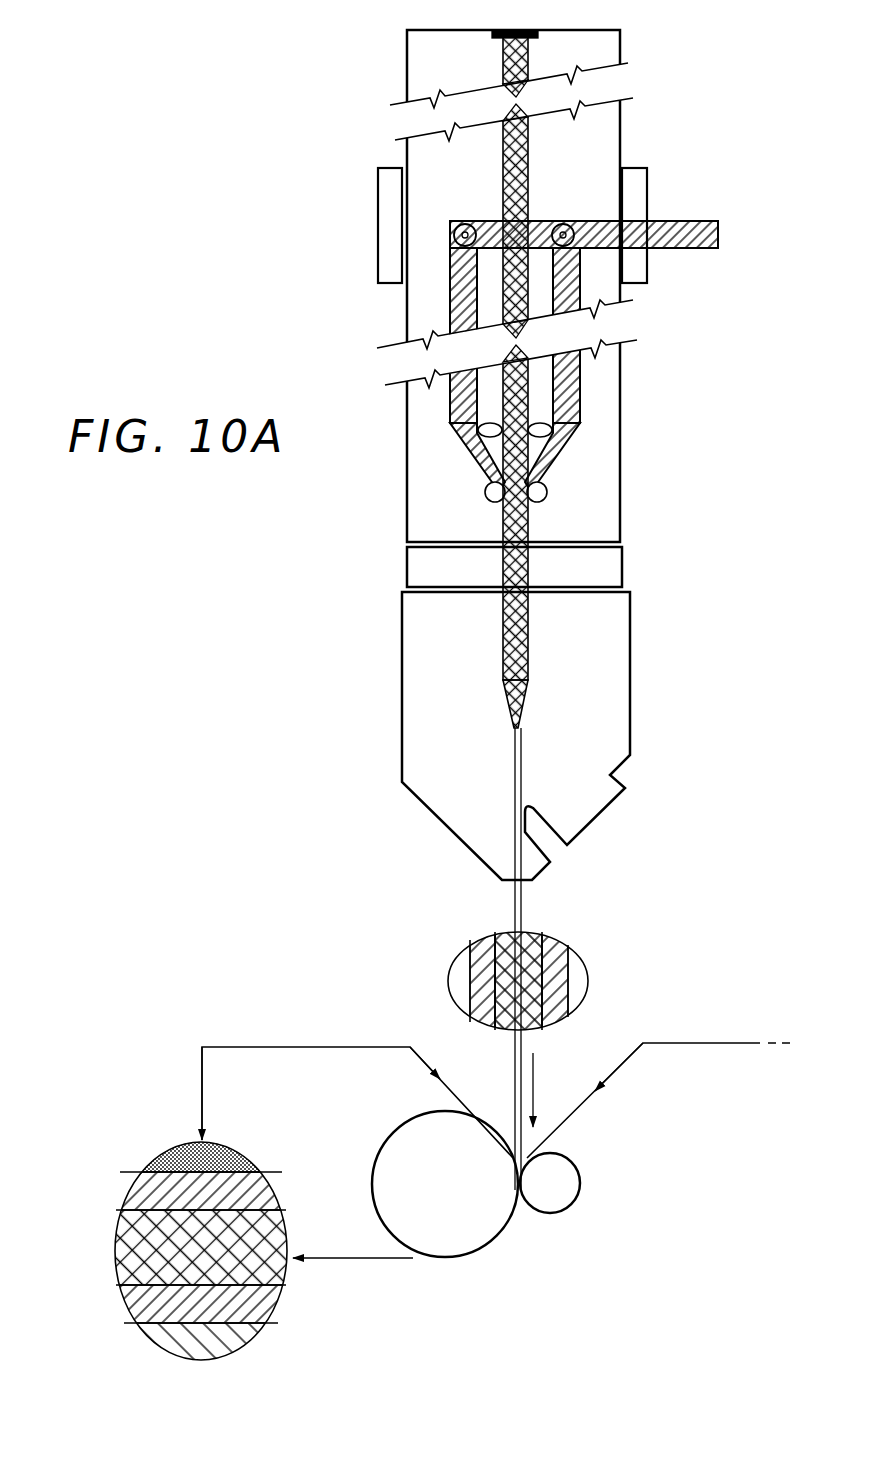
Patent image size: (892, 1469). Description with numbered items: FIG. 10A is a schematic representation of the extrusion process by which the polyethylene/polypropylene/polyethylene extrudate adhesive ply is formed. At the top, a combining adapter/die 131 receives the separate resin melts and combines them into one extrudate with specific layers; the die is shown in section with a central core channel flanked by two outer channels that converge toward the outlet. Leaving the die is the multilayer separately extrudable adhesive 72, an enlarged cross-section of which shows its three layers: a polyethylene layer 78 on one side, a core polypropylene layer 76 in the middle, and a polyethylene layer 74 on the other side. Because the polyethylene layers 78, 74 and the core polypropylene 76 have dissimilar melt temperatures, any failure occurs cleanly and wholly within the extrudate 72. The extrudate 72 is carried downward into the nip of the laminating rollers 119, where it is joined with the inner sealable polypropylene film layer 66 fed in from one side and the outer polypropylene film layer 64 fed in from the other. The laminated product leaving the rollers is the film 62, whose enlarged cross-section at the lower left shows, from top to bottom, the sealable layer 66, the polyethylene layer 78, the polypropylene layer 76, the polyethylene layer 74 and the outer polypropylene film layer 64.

The combining adapter/die 131 is at (297, 648).
The polypropylene layer 76 is at (520, 30).
The polyethylene layer 78 is at (450, 300).
The polyethylene layer 74 is at (577, 285).
The multilayer separately extrudable adhesive 72 is at (527, 903).
The inner sealable polypropylene film layer 66 is at (375, 1047).
The outer polypropylene film layer 64 is at (620, 1067).
The film 62 is at (123, 1140).
The laminating rollers 119 is at (527, 1222).